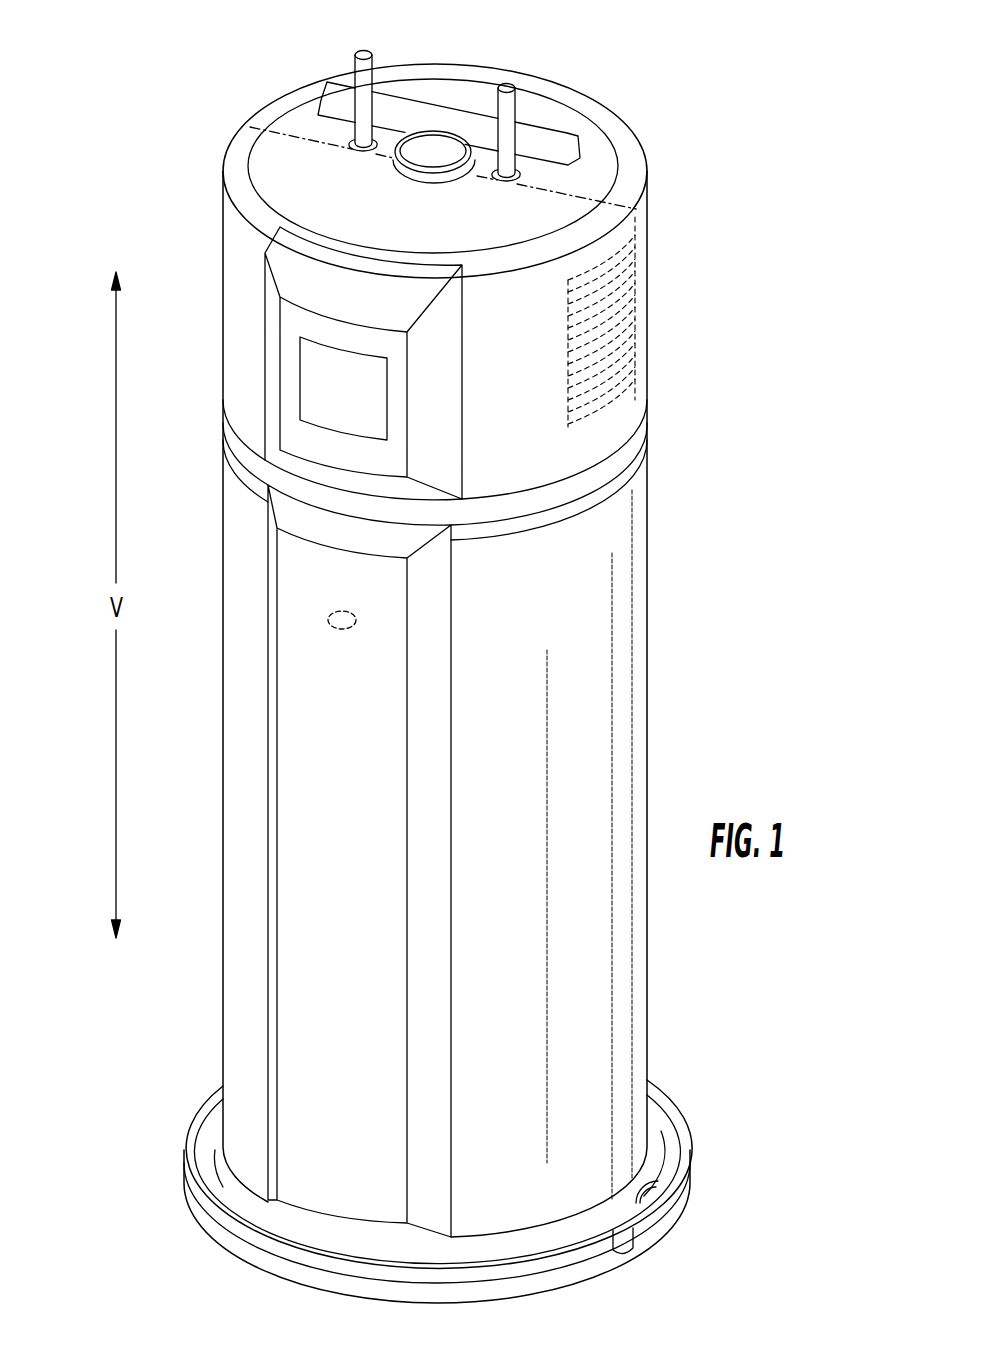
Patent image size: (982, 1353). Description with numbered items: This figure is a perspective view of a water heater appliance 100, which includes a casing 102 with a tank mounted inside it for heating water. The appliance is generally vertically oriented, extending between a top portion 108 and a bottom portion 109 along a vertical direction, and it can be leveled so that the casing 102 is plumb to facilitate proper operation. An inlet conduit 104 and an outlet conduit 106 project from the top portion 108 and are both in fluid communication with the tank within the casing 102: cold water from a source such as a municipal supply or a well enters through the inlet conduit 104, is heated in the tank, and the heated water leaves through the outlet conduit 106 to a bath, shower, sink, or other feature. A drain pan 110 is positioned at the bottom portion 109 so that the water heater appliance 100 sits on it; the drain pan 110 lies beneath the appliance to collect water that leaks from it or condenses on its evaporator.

The water heater appliance 100 is at (690, 126).
The casing 102 is at (620, 597).
The inlet conduit 104 is at (357, 68).
The outlet conduit 106 is at (507, 107).
The top portion 108 is at (200, 157).
The bottom portion 109 is at (168, 1130).
The drain pan 110 is at (708, 1148).